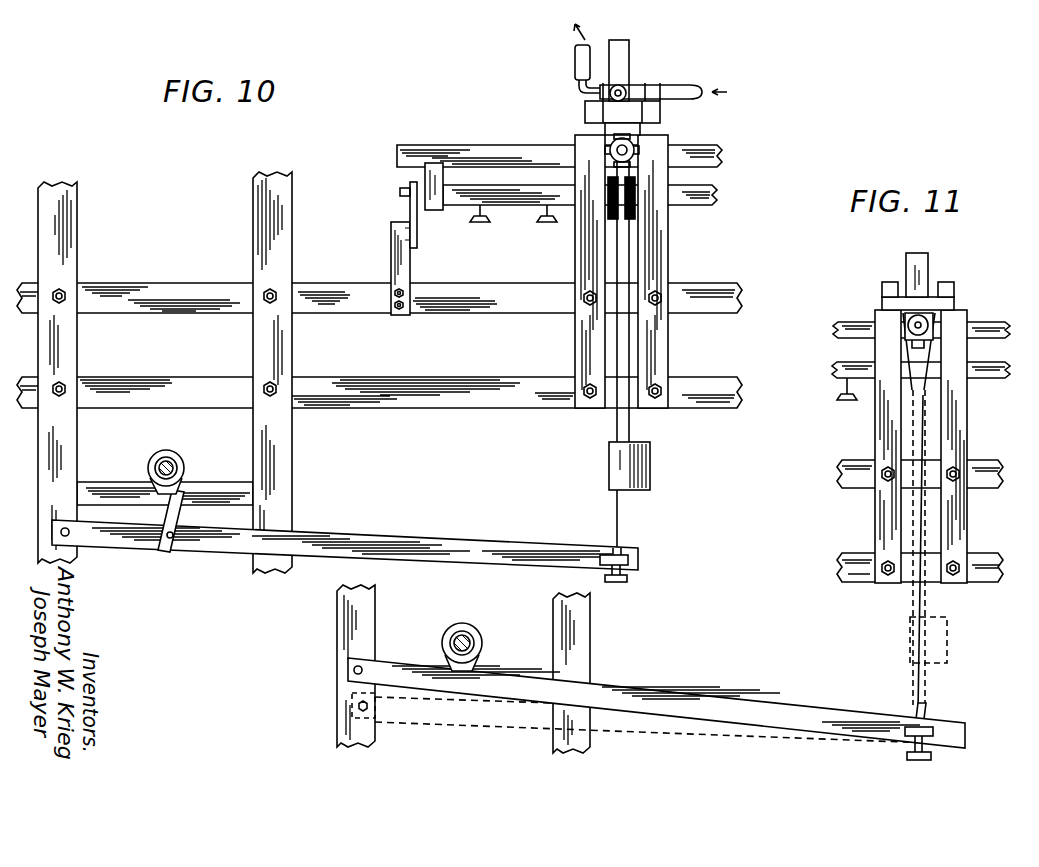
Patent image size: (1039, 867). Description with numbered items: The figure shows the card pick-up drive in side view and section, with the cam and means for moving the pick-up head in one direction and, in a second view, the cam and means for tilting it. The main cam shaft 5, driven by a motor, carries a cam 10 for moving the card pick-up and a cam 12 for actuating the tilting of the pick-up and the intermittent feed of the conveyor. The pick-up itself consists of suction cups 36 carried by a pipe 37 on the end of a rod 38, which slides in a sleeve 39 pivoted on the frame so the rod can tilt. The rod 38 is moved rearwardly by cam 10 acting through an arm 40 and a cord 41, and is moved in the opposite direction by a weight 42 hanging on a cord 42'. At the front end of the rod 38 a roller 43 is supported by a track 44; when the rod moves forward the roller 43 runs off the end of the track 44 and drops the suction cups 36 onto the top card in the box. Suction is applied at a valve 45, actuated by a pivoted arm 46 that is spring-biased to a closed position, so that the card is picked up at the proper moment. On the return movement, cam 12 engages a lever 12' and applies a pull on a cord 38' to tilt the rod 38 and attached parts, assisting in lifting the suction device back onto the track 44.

In FIG. 10, the main cam shaft 5 is at (161, 453).
In FIG. 11, the main cam shaft 5 is at (458, 632).
In FIG. 10, the cam 10 is at (166, 494).
In FIG. 11, the cam 12 is at (486, 645).
In FIG. 11, the lever 12' is at (656, 702).
In FIG. 10, the suction cups 36 is at (545, 222).
In FIG. 11, the suction cups 36 is at (845, 400).
In FIG. 10, the pipe 37 is at (686, 200).
In FIG. 10, the rod 38 is at (585, 131).
In FIG. 11, the cord 38' is at (944, 520).
In FIG. 10, the sleeve 39 is at (633, 138).
In FIG. 10, the arm 40 is at (360, 532).
In FIG. 11, the arm 40 is at (763, 733).
In FIG. 10, the cord 41 is at (616, 506).
In FIG. 10, the weight 42 is at (660, 468).
In FIG. 11, the weight 42 is at (949, 640).
In FIG. 10, the cord 42' is at (685, 192).
In FIG. 10, the roller 43 is at (408, 183).
In FIG. 10, the track 44 is at (417, 240).
In FIG. 10, the valve 45 is at (660, 82).
In FIG. 10, the arm 46 is at (628, 78).
In FIG. 11, the arm 46 is at (928, 272).